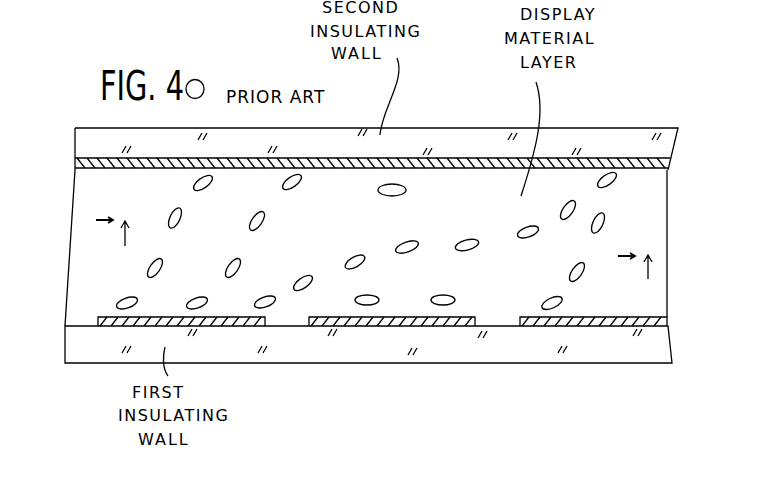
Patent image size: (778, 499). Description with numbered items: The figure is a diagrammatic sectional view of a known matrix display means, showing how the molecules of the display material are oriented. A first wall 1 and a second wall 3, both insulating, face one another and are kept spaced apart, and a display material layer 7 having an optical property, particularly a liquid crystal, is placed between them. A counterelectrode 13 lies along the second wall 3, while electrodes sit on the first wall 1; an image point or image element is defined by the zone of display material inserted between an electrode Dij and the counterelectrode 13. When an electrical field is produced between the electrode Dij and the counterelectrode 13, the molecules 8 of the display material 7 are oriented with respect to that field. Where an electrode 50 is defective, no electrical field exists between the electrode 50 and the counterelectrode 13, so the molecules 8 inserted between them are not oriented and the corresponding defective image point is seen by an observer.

The first wall 1 is at (73, 340).
The second wall 3 is at (76, 145).
The display material layer 7 is at (88, 194).
The molecules 8 is at (602, 221).
The counterelectrode 13 is at (583, 164).
The electrode 50 is at (448, 322).
The electrode Dij is at (611, 326).